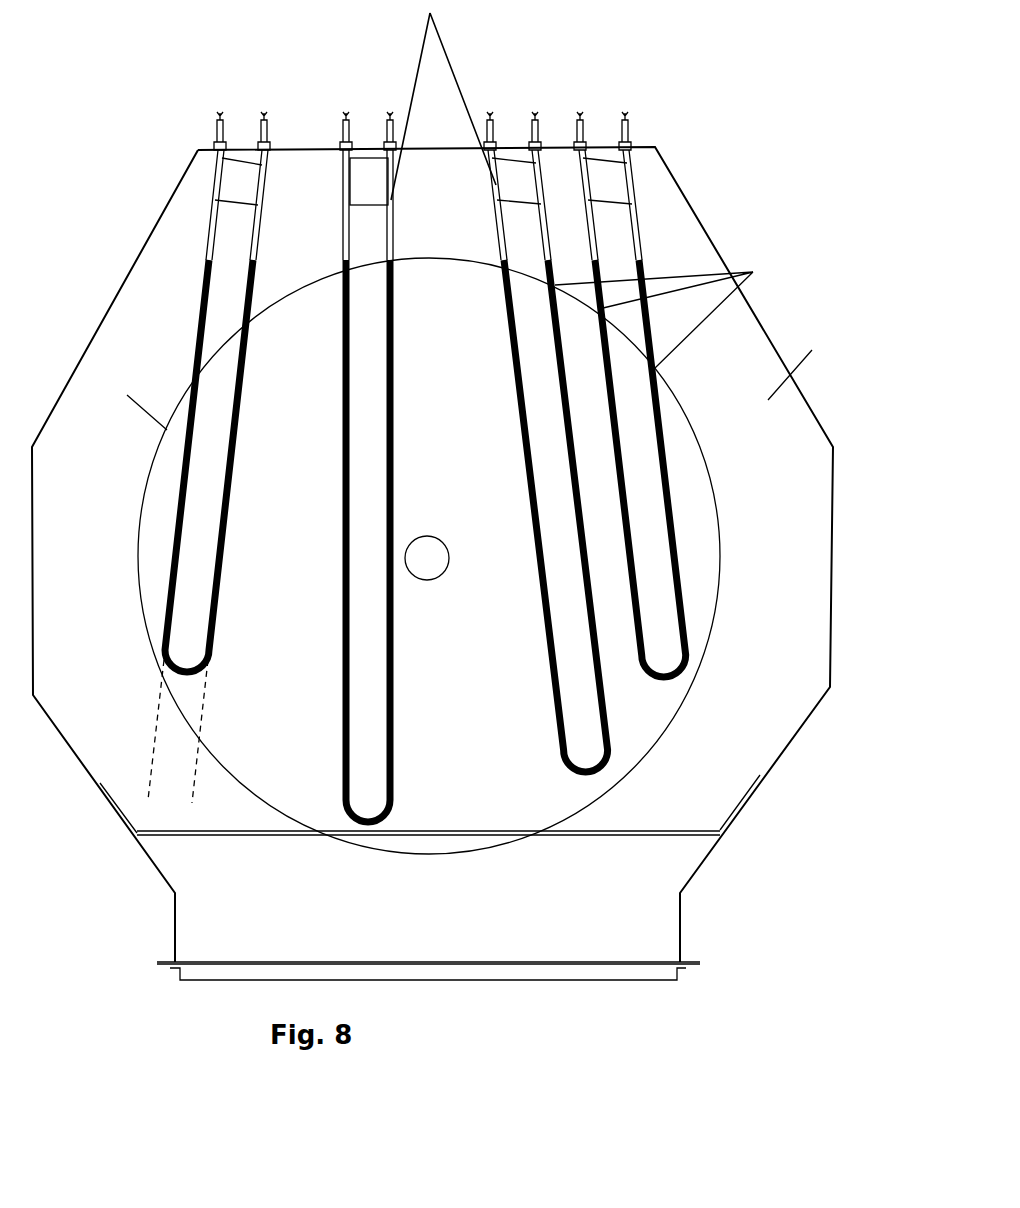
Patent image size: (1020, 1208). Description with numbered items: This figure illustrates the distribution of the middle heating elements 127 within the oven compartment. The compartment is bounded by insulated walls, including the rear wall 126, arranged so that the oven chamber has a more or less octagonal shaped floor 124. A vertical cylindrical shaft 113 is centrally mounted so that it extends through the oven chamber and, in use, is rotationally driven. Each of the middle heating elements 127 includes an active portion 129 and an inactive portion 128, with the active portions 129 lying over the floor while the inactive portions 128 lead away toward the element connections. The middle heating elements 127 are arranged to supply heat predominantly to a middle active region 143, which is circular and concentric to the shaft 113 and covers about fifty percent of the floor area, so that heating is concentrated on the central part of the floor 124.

The vertical cylindrical shaft 113 is at (441, 575).
The octagonal shaped floor 124 is at (730, 752).
The rear wall 126 is at (452, 155).
The middle heating elements 127 is at (648, 225).
The inactive portion 128 is at (637, 200).
The active portion 129 is at (665, 462).
The middle active region 143 is at (673, 390).